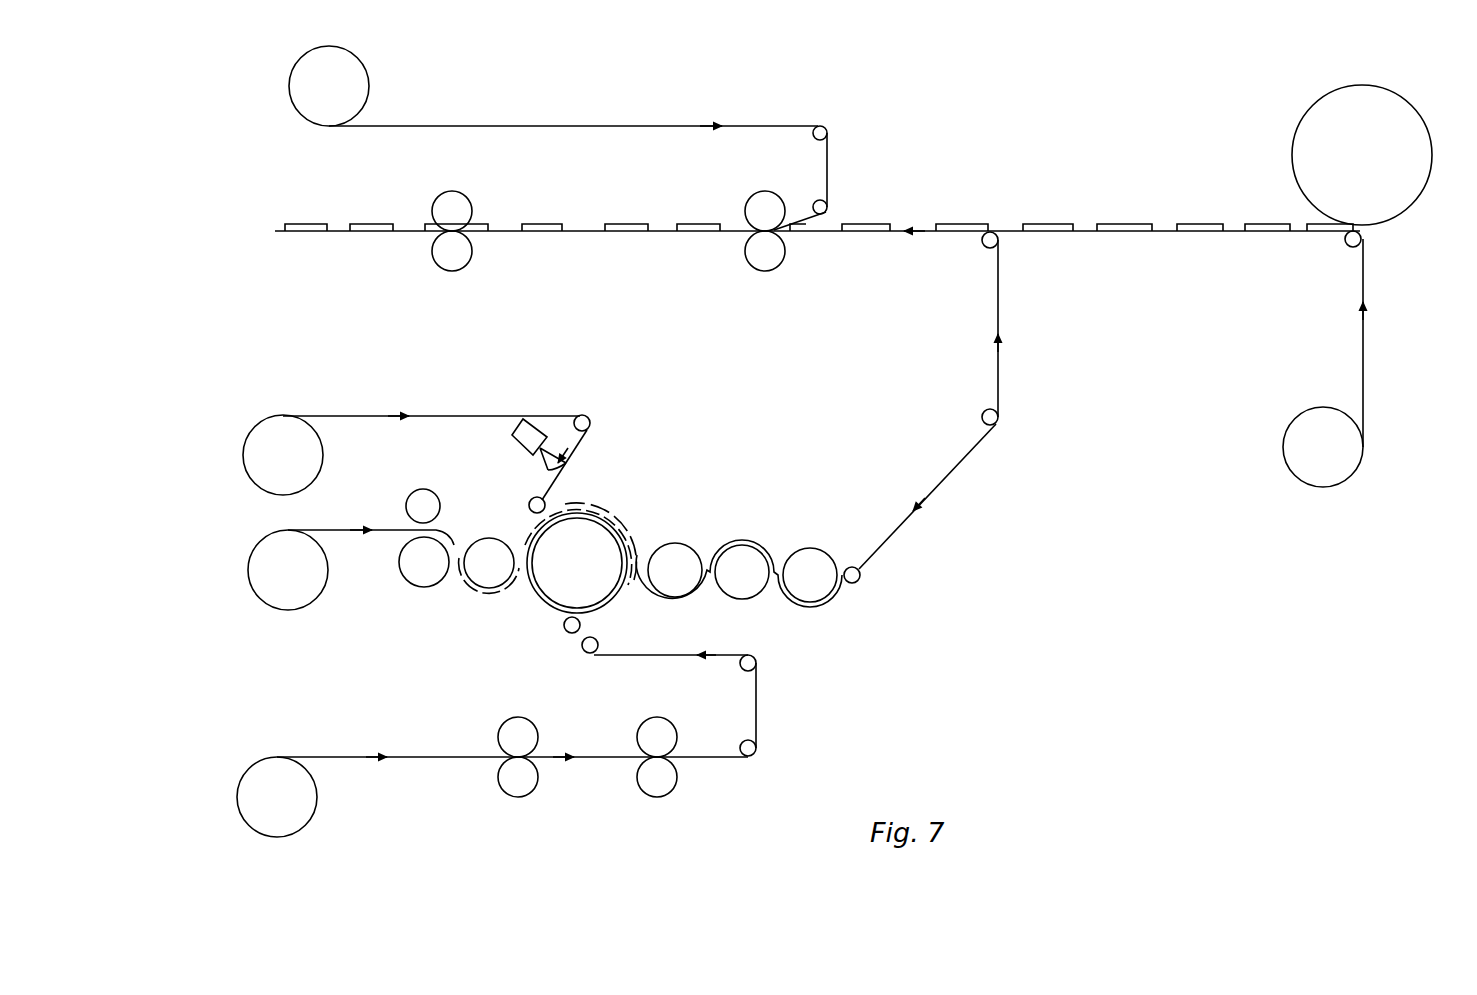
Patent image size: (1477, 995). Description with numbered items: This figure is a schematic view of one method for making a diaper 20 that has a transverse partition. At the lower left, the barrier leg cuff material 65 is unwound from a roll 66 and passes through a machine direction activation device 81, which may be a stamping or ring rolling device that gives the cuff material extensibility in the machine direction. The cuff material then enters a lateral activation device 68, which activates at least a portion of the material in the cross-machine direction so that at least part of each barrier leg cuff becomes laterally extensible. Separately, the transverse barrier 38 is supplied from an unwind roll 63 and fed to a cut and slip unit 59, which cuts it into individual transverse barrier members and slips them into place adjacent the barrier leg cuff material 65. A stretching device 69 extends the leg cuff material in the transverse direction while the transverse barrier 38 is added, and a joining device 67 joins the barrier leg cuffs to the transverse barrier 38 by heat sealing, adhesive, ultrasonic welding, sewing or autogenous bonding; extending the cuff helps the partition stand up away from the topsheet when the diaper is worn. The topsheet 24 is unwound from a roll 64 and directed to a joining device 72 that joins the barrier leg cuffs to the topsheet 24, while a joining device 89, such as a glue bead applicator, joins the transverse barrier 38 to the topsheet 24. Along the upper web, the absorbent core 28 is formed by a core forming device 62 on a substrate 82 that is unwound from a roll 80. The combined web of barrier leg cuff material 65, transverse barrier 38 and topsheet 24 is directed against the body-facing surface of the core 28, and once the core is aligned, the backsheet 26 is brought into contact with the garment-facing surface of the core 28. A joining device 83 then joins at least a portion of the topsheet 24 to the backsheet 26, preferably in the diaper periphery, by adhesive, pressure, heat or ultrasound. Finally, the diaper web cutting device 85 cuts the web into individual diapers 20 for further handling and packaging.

The diaper 20 is at (306, 223).
The backsheet 26 is at (512, 124).
The absorbent core 28 is at (1198, 224).
The core forming device 62 is at (1397, 135).
The diaper web cutting device 85 is at (447, 256).
The joining device 83 is at (765, 263).
The substrate 82 is at (1360, 318).
The roll 80 is at (1327, 462).
The roll 64 is at (263, 432).
The topsheet 24 is at (493, 414).
The joining device 89 is at (533, 440).
The cut and slip unit 59 is at (425, 499).
The unwind roll 63 is at (265, 573).
The transverse barrier 38 is at (394, 531).
The joining device 67 is at (487, 573).
The stretching device 69 is at (557, 595).
The joining device 72 is at (858, 518).
The roll 66 is at (267, 818).
The barrier leg cuff material 65 is at (448, 758).
The machine direction activation device 81 is at (525, 783).
The lateral activation device 68 is at (662, 785).